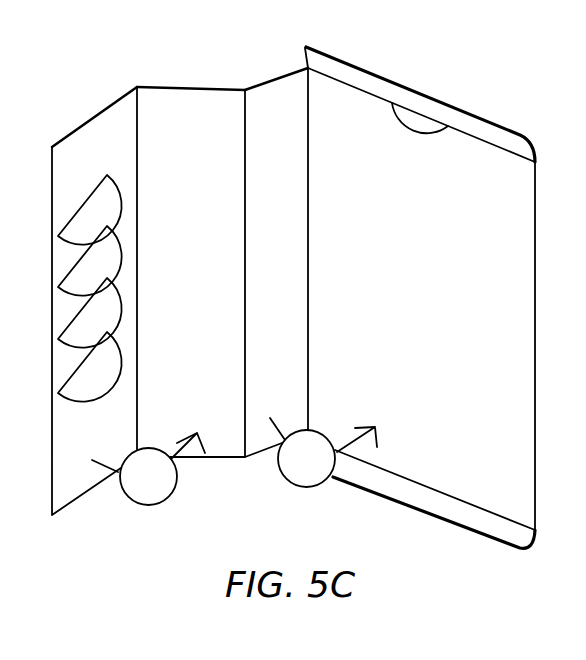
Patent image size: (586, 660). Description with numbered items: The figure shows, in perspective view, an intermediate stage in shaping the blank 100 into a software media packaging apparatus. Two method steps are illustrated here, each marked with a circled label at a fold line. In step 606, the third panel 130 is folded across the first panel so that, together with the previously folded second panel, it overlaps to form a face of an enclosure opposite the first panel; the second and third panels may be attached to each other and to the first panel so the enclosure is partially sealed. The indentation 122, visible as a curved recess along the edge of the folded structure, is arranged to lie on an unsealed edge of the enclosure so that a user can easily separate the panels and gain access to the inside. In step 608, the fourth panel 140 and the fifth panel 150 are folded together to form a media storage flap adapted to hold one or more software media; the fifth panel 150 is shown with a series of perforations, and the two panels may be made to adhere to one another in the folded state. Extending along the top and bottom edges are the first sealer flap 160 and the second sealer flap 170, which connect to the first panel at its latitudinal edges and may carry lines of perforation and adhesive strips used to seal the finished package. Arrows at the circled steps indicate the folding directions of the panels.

The blank 100 is at (221, 45).
The indentation 122 is at (435, 135).
The third panel 130 is at (296, 405).
The fourth panel 140 is at (214, 420).
The fifth panel 150 is at (128, 151).
The first sealer flap 160 is at (447, 104).
The second sealer flap 170 is at (417, 508).
The folding the third panel across the first panel 606 is at (323, 452).
The folding the fourth and fifth panels together 608 is at (148, 469).